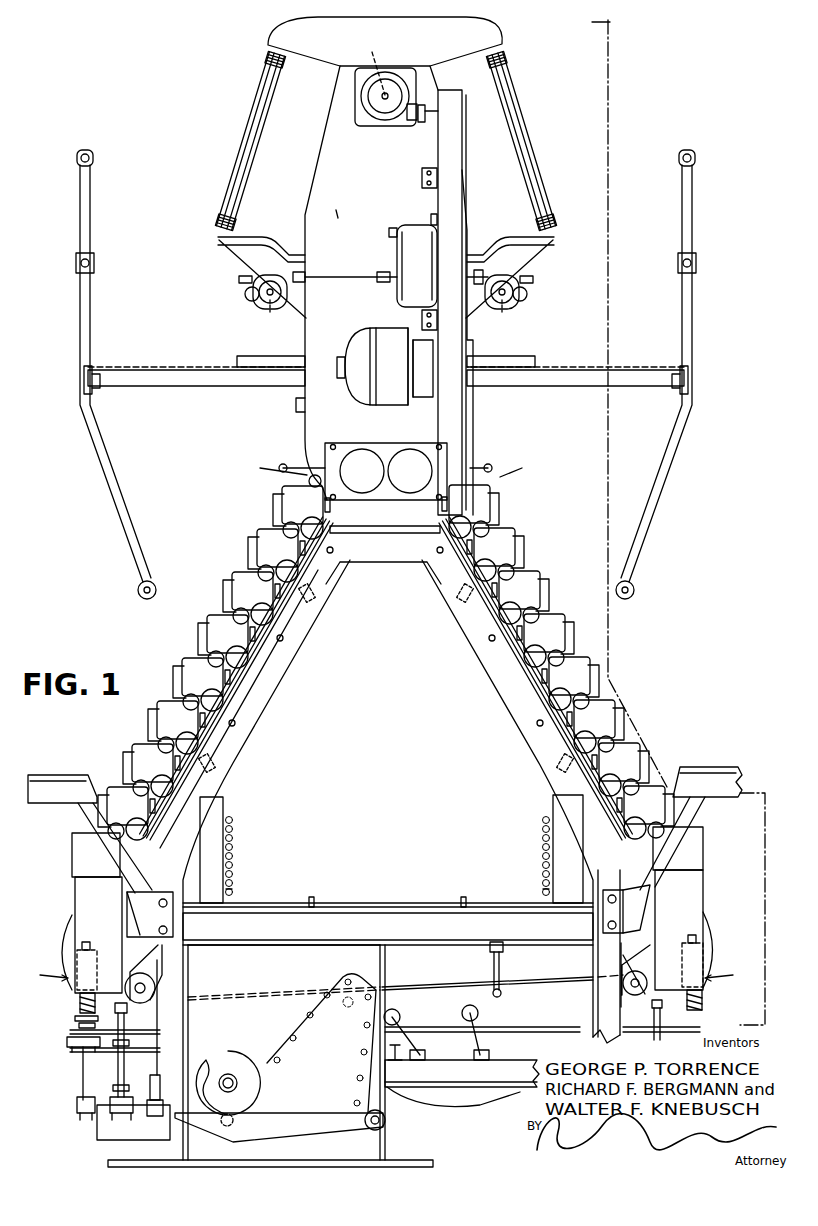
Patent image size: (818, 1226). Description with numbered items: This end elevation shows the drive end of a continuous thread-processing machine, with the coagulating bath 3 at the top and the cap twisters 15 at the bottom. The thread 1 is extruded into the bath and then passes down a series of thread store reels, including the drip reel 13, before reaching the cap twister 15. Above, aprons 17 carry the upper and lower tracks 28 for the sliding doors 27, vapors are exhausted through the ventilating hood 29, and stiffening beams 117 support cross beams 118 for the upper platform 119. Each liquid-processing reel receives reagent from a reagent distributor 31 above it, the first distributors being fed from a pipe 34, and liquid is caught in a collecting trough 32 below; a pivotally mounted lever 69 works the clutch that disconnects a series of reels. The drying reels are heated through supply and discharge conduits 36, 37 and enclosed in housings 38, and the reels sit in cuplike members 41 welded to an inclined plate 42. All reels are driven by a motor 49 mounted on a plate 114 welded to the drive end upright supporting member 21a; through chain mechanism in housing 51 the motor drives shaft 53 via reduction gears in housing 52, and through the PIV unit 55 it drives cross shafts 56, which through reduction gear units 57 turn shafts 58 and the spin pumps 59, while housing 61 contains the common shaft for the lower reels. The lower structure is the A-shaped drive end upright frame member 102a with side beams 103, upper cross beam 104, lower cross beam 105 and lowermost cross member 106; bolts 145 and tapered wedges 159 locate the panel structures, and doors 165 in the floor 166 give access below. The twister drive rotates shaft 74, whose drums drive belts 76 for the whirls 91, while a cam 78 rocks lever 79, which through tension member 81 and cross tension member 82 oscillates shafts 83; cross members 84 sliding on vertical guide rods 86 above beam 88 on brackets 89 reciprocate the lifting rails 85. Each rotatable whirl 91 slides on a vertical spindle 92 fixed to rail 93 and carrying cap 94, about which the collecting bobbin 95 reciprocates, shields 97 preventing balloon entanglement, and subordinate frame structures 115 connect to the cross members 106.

The thread 1 is at (70, 923).
The coagulating bath 3 is at (670, 528).
The drip reel 13 is at (268, 975).
The cap twister 15 is at (386, 975).
The apron 17 is at (270, 236).
The drive end upright supporting member 21a is at (328, 132).
The sliding door 27 is at (248, 130).
The upper and lower tracks 28 is at (264, 52).
The ventilating hood 29 is at (436, 48).
The reagent distributor 31 is at (637, 713).
The collecting trough 32 is at (285, 506).
The pipe 34 is at (312, 476).
The supply conduit 36 is at (233, 822).
The discharge conduit 37 is at (235, 886).
The housing 38 is at (74, 850).
The cuplike member 41 is at (305, 603).
The inclined plate 42 is at (340, 660).
The motor 49 is at (365, 336).
The chain housing 51 is at (438, 152).
The reduction gear housing 52 is at (376, 125).
The shaft 53 is at (364, 65).
The PIV unit 55 is at (406, 232).
The cross shaft 56 is at (353, 275).
The reduction gear unit 57 is at (262, 301).
The spin pump shaft 58 is at (270, 302).
The spin pump 59 is at (239, 279).
The housing 61 is at (355, 448).
The pivotally mounted lever 69 is at (282, 465).
The shaft 74 is at (348, 1010).
The belt 76 is at (80, 1034).
The cam 78 is at (246, 1060).
The lever 79 is at (303, 1113).
The tension member 81 is at (160, 1049).
The cross tension member 82 is at (448, 985).
The shaft 83 is at (140, 973).
The cross member 84 is at (428, 1100).
The lifting rail 85 is at (70, 1048).
The vertical guide rod 86 is at (117, 1086).
The beam 88 is at (120, 1114).
The bracket 89 is at (100, 1136).
The rotatable whirl 91 is at (75, 1018).
The vertical spindle 92 is at (82, 1080).
The fixed rail 93 is at (78, 1105).
The cap 94 is at (76, 960).
The collecting bobbin 95 is at (78, 1003).
The shield 97 is at (90, 891).
The drive end upright frame member 102a is at (497, 716).
The side beam 103 is at (232, 757).
The upper cross beam 104 is at (390, 565).
The lower cross beam 105 is at (386, 922).
The lowermost cross member 106 is at (520, 1077).
The plate 114 is at (342, 203).
The subordinate frame structure 115 is at (413, 1040).
The stiffening beam 117 is at (295, 404).
The cross beam 118 is at (166, 388).
The upper platform 119 is at (145, 365).
The bolt 145 is at (437, 550).
The tapered wedge 159 is at (316, 599).
The door 165 is at (431, 903).
The floor 166 is at (295, 906).